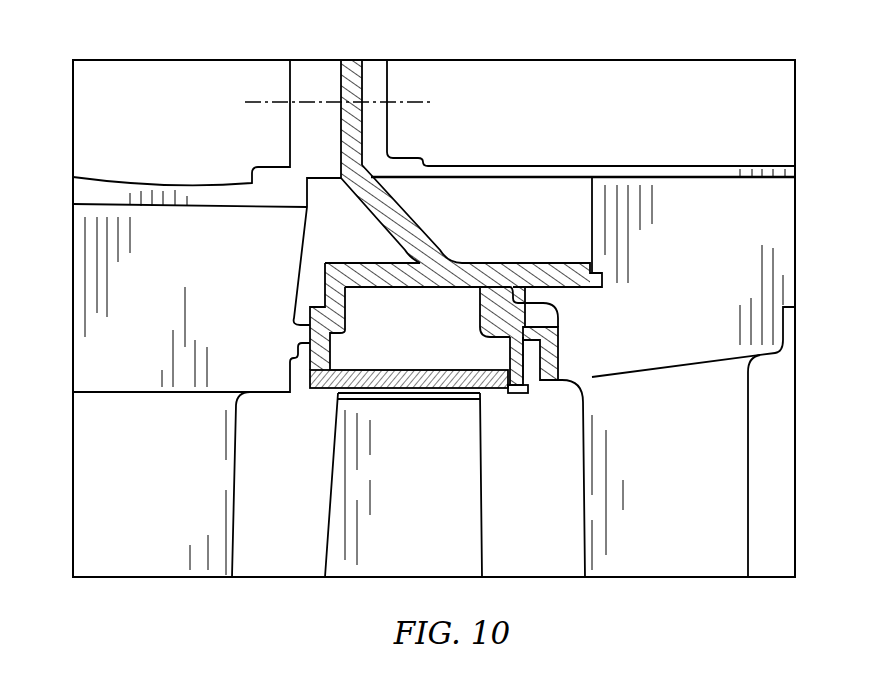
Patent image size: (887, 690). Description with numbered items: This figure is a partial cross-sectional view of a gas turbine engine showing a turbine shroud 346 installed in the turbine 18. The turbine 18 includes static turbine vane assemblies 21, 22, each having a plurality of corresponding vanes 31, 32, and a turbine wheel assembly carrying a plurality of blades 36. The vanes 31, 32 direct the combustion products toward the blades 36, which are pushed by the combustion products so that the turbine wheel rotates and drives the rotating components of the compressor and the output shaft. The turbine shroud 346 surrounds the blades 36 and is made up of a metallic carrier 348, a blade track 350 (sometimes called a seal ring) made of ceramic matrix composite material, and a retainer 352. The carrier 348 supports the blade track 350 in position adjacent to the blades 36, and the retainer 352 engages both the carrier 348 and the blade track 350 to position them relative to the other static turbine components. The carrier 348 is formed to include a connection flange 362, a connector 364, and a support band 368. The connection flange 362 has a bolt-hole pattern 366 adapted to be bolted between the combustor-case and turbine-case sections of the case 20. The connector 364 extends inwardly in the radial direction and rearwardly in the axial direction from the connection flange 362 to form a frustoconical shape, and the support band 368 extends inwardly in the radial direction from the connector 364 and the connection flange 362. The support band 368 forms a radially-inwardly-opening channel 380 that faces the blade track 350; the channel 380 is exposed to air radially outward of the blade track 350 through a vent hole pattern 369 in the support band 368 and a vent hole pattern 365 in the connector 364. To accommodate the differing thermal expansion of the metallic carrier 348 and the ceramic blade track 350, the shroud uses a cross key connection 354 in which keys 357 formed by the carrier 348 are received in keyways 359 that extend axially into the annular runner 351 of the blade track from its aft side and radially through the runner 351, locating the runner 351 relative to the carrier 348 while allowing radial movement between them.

The turbine 18 is at (668, 100).
The case 20 is at (712, 172).
The static turbine vane assembly 21 is at (72, 497).
The static turbine vane assembly 22 is at (760, 496).
The vane 31 is at (113, 520).
The vane 32 is at (715, 563).
The blade 36 is at (268, 505).
The turbine shroud 346 is at (450, 232).
The carrier 348 is at (397, 196).
The blade track 350 is at (392, 362).
The annular runner 351 is at (307, 380).
The retainer 352 is at (560, 333).
The cross key connection 354 is at (560, 354).
The key 357 is at (517, 396).
The keyway 359 is at (530, 352).
The connection flange 362 is at (365, 133).
The connector 364 is at (340, 191).
The vent hole pattern 365 is at (385, 200).
The bolt-hole pattern 366 is at (363, 99).
The support band 368 is at (340, 262).
The vent hole pattern 369 is at (397, 278).
The channel 380 is at (430, 345).